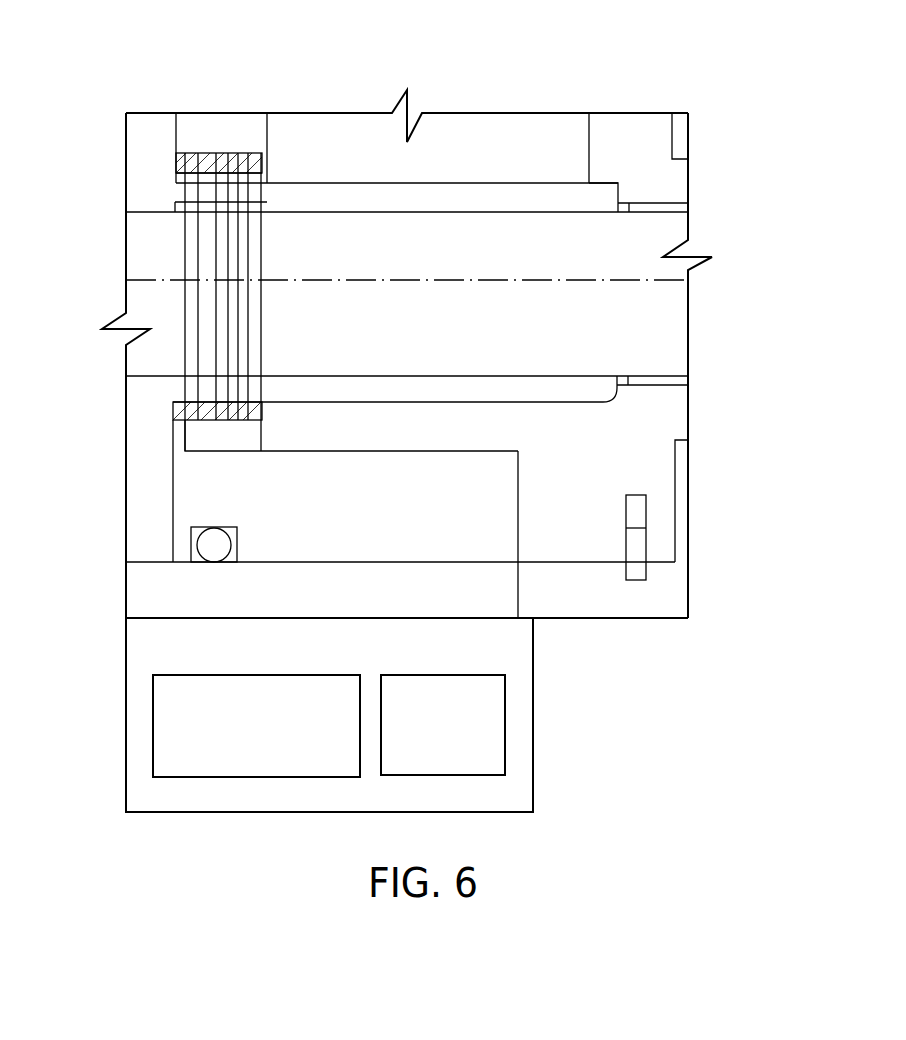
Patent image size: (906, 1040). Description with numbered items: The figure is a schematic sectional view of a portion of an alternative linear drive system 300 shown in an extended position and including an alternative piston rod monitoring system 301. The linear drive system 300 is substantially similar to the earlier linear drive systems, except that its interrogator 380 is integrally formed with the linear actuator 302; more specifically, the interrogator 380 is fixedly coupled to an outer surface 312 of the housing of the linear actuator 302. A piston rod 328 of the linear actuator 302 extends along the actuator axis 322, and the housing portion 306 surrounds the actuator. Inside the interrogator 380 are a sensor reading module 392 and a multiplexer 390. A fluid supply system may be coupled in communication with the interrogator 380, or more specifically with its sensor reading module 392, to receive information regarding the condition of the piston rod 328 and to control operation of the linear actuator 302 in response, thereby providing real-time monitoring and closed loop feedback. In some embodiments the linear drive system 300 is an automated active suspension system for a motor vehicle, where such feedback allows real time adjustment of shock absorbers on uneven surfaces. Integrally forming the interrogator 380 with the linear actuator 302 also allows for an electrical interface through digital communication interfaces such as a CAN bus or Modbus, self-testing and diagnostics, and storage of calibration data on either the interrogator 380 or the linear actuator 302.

The alternative linear drive system 300 is at (192, 63).
The alternative piston rod monitoring system 301 is at (305, 427).
The linear actuator 302 is at (202, 485).
The housing support portion 306 is at (637, 598).
The outer surface 312 is at (653, 620).
The rotation axis 322 is at (622, 280).
The piston rod 328 is at (632, 227).
The interrogator 380 is at (535, 773).
The multiplexer 390 is at (505, 725).
The sensor reading module 392 is at (153, 707).